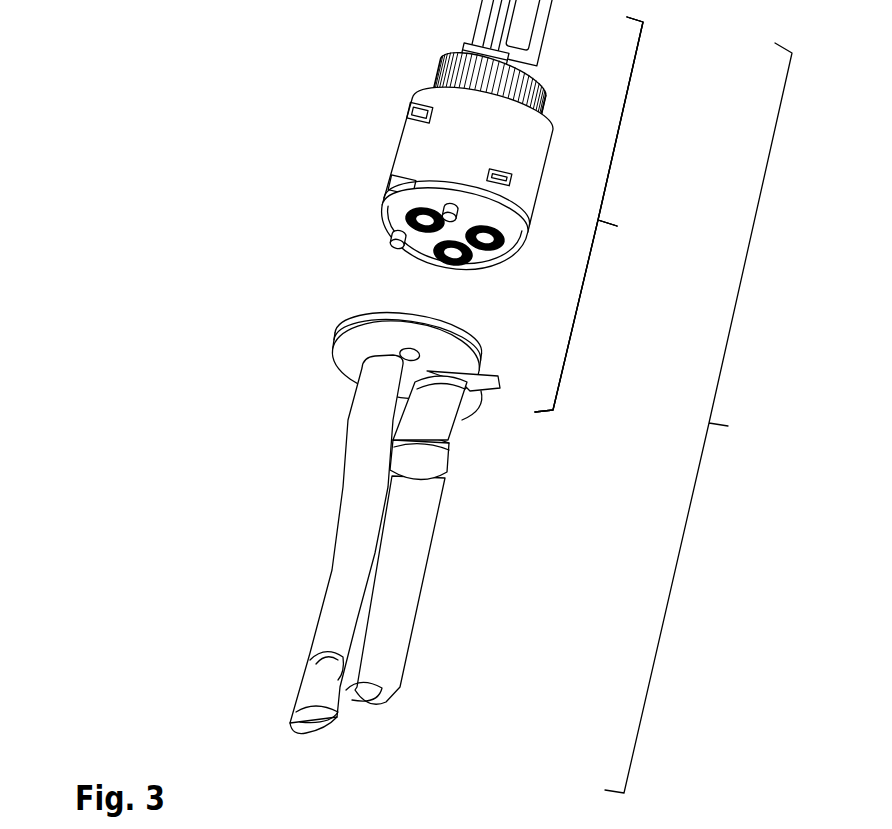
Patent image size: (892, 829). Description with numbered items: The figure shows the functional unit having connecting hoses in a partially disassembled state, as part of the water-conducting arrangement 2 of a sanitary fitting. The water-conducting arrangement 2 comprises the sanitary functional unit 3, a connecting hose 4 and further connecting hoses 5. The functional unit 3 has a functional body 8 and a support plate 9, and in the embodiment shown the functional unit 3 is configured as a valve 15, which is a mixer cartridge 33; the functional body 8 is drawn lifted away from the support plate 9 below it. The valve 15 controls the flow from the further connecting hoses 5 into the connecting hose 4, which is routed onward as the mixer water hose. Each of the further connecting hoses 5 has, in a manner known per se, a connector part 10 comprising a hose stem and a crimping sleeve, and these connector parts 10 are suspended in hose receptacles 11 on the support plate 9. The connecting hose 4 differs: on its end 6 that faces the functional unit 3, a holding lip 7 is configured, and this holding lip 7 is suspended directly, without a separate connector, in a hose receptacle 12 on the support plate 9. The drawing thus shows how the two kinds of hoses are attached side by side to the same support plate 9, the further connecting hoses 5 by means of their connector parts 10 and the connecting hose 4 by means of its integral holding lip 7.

The water-conducting arrangement 2 is at (698, 418).
The sanitary functional unit 3 is at (630, 214).
The valve 15 is at (630, 214).
The mixer cartridge 33 is at (630, 214).
The connecting hose 4 is at (345, 573).
The further connecting hoses 5 is at (310, 688).
The end of the connecting hose 6 is at (358, 355).
The holding lip 7 is at (385, 828).
The functional body 8 is at (393, 158).
The support plate 9 is at (333, 320).
The connector part 10 is at (423, 425).
The hose receptacles 11 is at (472, 382).
The hose receptacle 12 is at (348, 367).